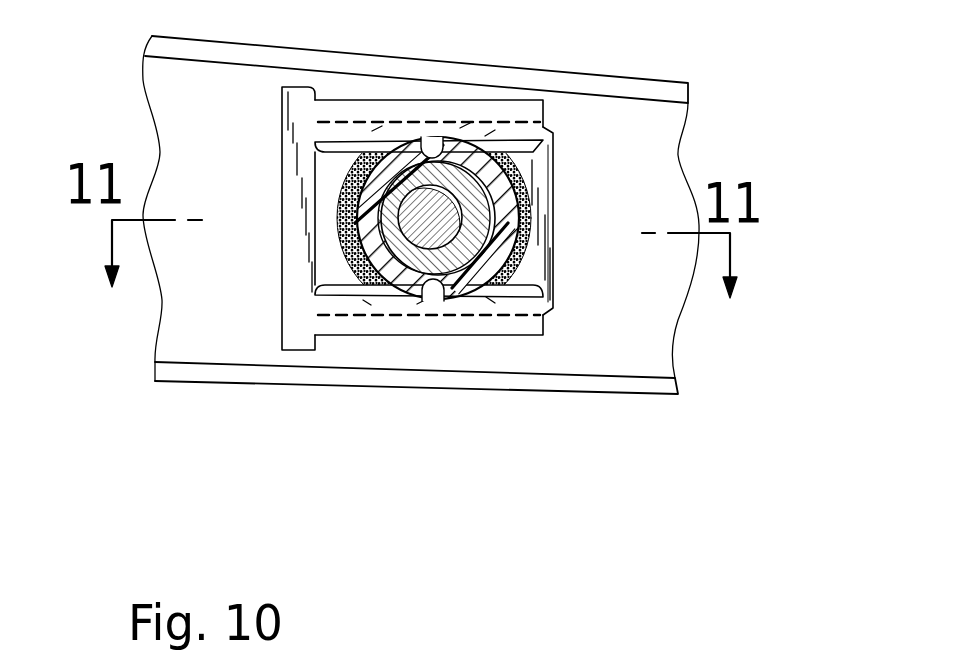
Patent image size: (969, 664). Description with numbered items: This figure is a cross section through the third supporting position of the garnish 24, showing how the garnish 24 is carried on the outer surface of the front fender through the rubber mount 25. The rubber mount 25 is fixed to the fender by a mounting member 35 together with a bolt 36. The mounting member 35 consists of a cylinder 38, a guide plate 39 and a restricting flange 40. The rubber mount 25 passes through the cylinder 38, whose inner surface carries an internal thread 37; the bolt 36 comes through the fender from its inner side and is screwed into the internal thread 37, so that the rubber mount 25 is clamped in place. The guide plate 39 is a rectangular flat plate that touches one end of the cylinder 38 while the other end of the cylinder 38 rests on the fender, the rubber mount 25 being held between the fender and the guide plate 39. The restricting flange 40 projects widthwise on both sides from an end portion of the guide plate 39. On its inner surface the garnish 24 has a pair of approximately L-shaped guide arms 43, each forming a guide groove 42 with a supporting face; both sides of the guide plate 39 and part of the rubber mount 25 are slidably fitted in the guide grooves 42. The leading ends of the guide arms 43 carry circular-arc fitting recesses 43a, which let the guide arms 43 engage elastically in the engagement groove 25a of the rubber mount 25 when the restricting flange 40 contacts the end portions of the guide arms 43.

The garnish 24 is at (612, 78).
The rubber mount 25 is at (403, 283).
The engagement groove 25a is at (362, 262).
The mounting member 35 is at (563, 201).
The bolt 36 is at (395, 160).
The internal thread 37 is at (502, 166).
The cylinder 38 is at (450, 290).
The guide plate 39 is at (537, 262).
The restricting flange 40 is at (300, 100).
The guide groove 42 is at (525, 112).
The guide arm 43 is at (327, 138).
The fitting recess 43a is at (445, 146).